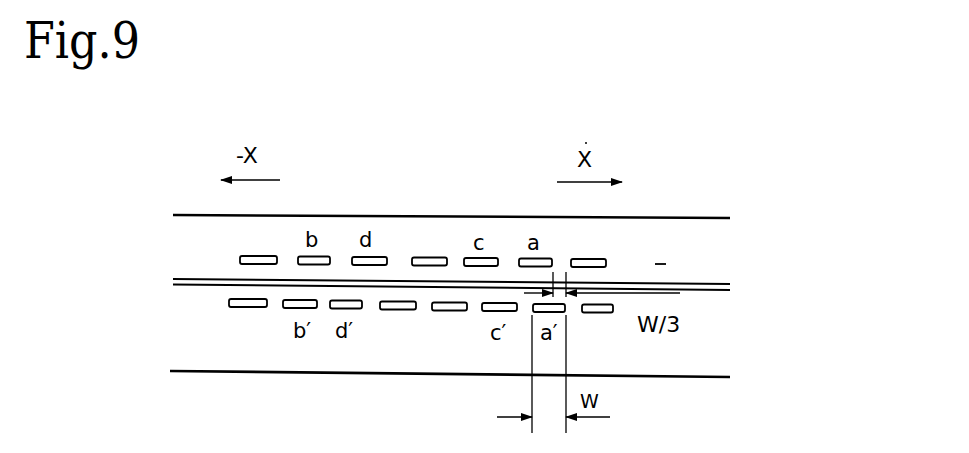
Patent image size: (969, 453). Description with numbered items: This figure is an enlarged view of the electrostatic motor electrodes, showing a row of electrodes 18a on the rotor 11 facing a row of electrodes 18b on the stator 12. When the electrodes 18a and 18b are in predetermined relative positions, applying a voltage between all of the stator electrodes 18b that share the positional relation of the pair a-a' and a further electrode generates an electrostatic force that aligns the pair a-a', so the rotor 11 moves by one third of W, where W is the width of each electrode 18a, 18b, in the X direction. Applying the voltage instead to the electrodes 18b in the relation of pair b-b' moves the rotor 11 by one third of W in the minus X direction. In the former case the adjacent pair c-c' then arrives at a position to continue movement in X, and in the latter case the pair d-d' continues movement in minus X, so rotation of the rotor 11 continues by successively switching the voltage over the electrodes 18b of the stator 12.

The rotor 11 is at (722, 243).
The stator 12 is at (716, 338).
The electrodes 18a is at (430, 257).
The electrodes 18b is at (394, 310).